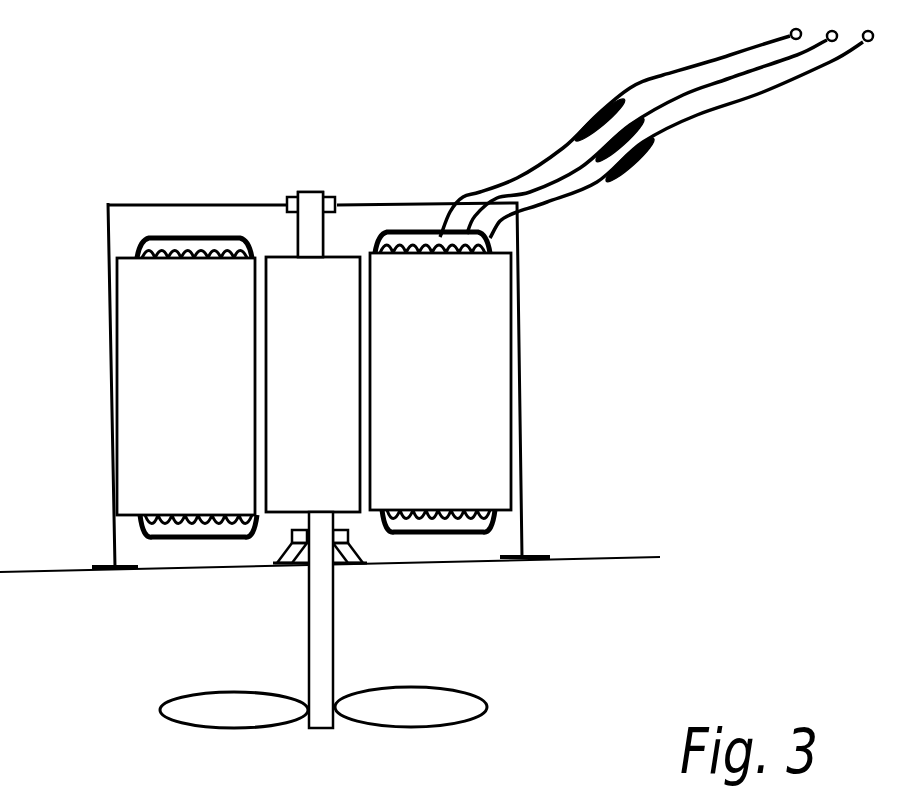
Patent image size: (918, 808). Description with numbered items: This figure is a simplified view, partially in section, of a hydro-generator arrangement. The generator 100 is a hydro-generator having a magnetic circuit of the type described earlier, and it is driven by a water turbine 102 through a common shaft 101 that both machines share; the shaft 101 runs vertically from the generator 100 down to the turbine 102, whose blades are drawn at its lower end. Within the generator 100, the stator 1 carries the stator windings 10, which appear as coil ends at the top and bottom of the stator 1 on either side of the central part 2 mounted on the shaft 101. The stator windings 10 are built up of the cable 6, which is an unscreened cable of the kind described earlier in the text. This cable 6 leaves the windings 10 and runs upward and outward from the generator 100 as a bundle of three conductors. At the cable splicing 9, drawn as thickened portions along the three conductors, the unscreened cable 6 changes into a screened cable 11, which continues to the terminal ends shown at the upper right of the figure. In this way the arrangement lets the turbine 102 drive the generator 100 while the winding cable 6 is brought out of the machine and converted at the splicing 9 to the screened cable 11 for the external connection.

The stator 1 is at (148, 340).
The rotor 2 is at (357, 517).
The cable 6 is at (515, 170).
The cable splicing 9 is at (630, 168).
The stator windings 10 is at (410, 233).
The screened cable 11 is at (773, 97).
The generator 100 is at (577, 405).
The common shaft 101 is at (306, 615).
The water turbine 102 is at (237, 680).